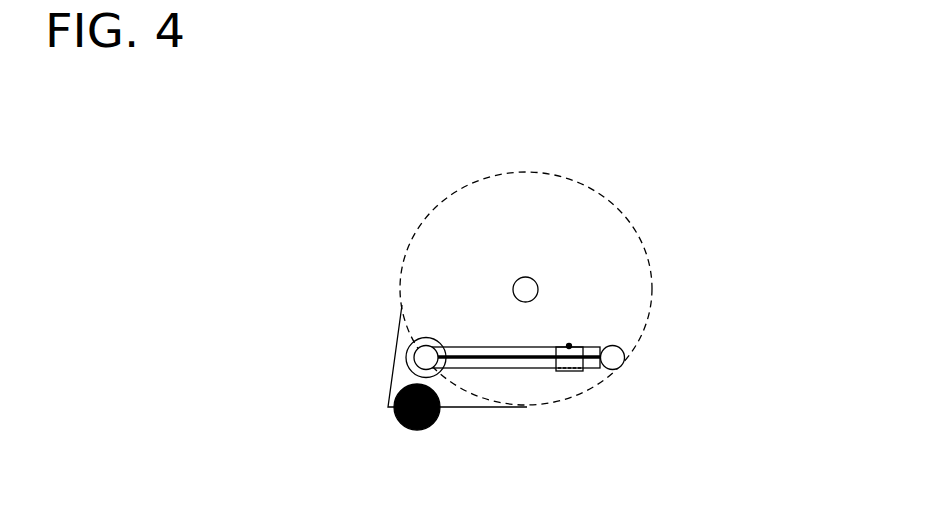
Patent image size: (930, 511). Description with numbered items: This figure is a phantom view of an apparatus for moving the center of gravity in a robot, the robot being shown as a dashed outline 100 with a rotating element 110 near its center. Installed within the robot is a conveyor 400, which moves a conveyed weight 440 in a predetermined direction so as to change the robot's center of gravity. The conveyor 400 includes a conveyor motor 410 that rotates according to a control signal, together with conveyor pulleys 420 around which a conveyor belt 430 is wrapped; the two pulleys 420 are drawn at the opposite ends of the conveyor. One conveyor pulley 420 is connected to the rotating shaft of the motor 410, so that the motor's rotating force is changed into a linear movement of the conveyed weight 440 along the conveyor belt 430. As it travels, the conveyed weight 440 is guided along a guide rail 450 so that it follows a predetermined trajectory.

The robot cleaner body 100 is at (525, 172).
The rotation shaft 110 is at (538, 286).
The conveyor 400 is at (534, 381).
The conveyor motor 410 is at (407, 341).
The conveyor pulleys 420 is at (406, 357).
The conveyor belt 430 is at (598, 347).
The conveyed weight 440 is at (577, 372).
The guide rail 450 is at (468, 358).